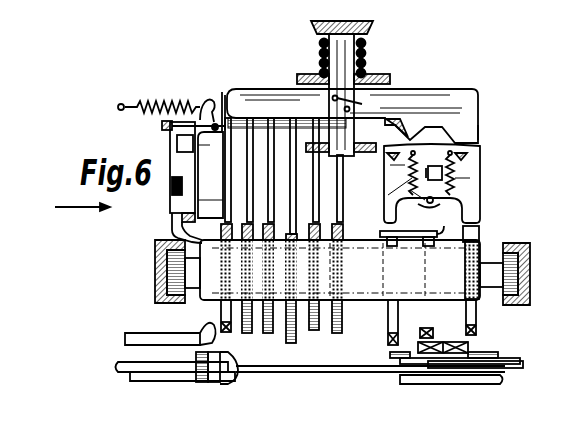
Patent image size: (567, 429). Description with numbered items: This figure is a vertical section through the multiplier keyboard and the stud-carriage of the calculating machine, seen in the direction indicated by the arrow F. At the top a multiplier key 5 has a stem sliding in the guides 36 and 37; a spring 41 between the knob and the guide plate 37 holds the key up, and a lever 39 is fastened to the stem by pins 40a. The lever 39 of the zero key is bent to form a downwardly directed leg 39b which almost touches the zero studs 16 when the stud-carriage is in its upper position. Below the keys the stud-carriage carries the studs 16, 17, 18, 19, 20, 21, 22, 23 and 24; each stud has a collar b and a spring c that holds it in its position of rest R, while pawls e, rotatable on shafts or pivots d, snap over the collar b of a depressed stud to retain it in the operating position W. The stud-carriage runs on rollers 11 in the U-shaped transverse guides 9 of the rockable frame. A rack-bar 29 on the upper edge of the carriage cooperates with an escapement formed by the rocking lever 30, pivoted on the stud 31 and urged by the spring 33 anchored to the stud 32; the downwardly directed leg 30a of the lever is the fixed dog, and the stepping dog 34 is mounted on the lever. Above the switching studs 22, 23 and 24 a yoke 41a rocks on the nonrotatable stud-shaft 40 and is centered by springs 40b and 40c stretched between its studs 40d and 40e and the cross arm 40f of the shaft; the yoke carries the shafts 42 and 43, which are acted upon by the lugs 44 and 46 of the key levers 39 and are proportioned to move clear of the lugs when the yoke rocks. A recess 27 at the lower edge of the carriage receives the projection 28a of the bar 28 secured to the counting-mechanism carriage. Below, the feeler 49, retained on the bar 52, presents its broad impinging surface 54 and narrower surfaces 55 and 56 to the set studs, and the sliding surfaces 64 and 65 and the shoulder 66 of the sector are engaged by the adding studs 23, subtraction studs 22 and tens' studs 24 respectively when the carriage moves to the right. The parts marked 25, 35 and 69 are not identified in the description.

The multiplier adjusting key 5 is at (373, 28).
The spring 41 is at (366, 50).
The guide plate 37 is at (390, 79).
The lever 39 is at (437, 97).
The pin 40a is at (349, 109).
The guide 36 is at (342, 95).
The lug 46 is at (412, 130).
The lug 44 is at (479, 121).
The shaft 42 is at (480, 156).
The stud 40d is at (415, 155).
The stud-shaft 40 is at (437, 174).
The stud 40e is at (452, 160).
The yoke 41a is at (480, 184).
The spring 40c is at (433, 200).
The shaft 43 is at (396, 160).
The spring 40b is at (408, 186).
The cross arm 40f is at (421, 202).
The adding switching stud 23 is at (479, 230).
The plate 25 is at (408, 230).
The tens'-switching stud 24 is at (439, 225).
The subtraction switching stud 22 is at (384, 244).
The transverse frame part 9 is at (155, 252).
The roller 11 is at (167, 268).
The zero stud 16 is at (222, 230).
The calculating stud 17 is at (245, 230).
The stud 18 is at (266, 230).
The stud 19 is at (290, 232).
The stud 20 is at (312, 230).
The stud 21 is at (336, 230).
The rack-bar 29 is at (195, 232).
The downwardly directed leg 30a is at (211, 175).
The downwardly directed leg 39b is at (211, 190).
The stepping dog 34 is at (170, 185).
The bolt 35 is at (162, 126).
The stud 32 is at (118, 96).
The spring 33 is at (153, 102).
The rocking lever 30 is at (213, 98).
The pivoting stud 31 is at (222, 92).
The bar 28 is at (140, 340).
The recess 27 is at (208, 315).
The projection 28a is at (214, 338).
The feeler 49 is at (120, 365).
The impinging surface 56 is at (200, 382).
The central impinging surface 54 is at (214, 382).
The impinging surface 55 is at (233, 383).
The bar 52 is at (342, 372).
The sliding surface 65 is at (390, 355).
The shoulder 66 is at (448, 340).
The sliding surface 64 is at (490, 353).
The bar 69 is at (505, 378).
The arrow F is at (70, 208).
The collar b is at (345, 252).
The spring c is at (340, 280).
The shaft d is at (479, 297).
The pawl e is at (249, 320).
The operating position W is at (293, 345).
The position of rest R is at (318, 333).